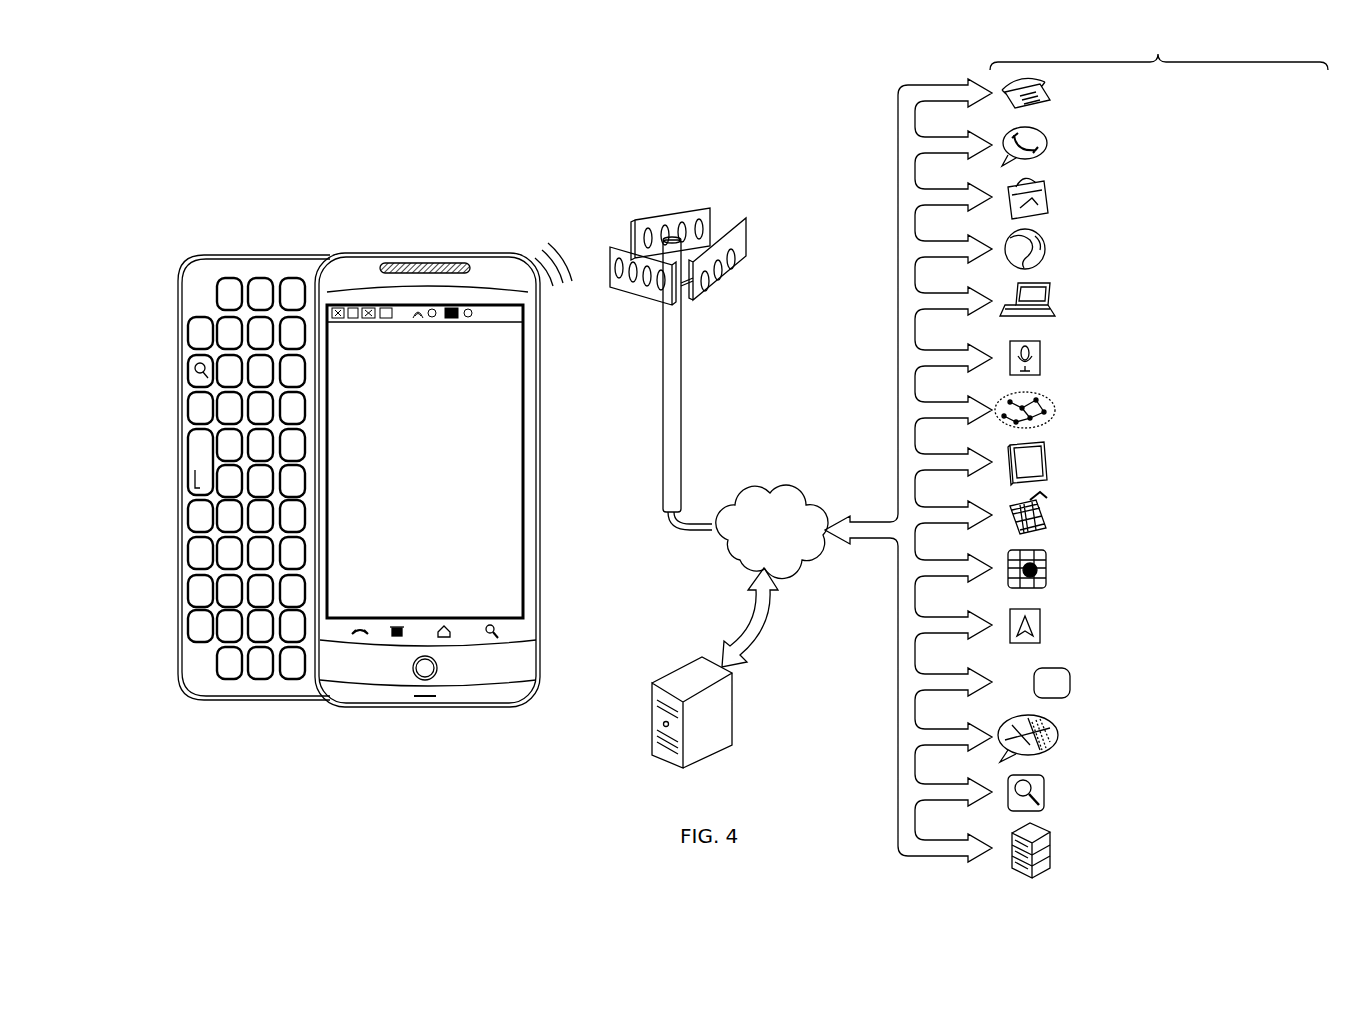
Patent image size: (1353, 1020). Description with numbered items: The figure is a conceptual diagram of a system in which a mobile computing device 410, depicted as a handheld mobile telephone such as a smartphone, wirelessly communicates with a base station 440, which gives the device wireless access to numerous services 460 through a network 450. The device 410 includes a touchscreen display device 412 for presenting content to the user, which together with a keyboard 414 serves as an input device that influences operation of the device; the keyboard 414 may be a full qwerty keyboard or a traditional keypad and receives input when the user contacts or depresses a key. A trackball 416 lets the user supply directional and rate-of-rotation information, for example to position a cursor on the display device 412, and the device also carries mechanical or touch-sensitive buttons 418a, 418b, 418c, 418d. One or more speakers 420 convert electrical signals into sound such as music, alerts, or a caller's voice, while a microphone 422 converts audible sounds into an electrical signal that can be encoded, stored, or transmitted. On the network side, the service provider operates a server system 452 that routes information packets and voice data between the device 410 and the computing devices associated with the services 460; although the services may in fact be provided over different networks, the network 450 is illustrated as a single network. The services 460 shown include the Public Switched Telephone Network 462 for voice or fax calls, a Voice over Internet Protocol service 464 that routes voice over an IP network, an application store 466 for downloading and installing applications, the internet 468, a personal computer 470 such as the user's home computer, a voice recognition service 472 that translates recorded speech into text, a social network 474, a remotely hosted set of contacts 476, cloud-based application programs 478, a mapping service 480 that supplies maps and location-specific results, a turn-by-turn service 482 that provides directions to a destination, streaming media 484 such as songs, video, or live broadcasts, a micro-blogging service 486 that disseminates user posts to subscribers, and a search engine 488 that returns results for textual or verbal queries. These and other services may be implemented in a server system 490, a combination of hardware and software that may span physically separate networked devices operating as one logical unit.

The mobile computing device 410 is at (478, 201).
The touchscreen display device 412 is at (530, 470).
The keyboard 414 is at (285, 257).
The trackball 416 is at (438, 668).
The button 418a is at (360, 625).
The button 418b is at (397, 625).
The button 418c is at (445, 625).
The button 418d is at (492, 625).
The speaker 420 is at (430, 265).
The microphone 422 is at (425, 700).
The base station 440 is at (724, 187).
The network 450 is at (765, 490).
The service provider server system 452 is at (733, 716).
The services 460 is at (1076, 456).
The Public Switched Telephone Network (PSTN) 462 is at (1050, 97).
The Voice over Internet Protocol (VoIP) service 464 is at (1048, 145).
The application store 466 is at (1046, 197).
The internet 468 is at (1046, 252).
The personal computer 470 is at (1052, 294).
The voice recognition service 472 is at (1042, 355).
The social network 474 is at (1056, 400).
The contacts 476 is at (1048, 462).
The cloud-based application programs 478 is at (1050, 518).
The mapping service 480 is at (1046, 560).
The turn-by-turn service 482 is at (1044, 622).
The streaming media 484 is at (1072, 680).
The micro-blogging service 486 is at (1056, 738).
The search engine 488 is at (1046, 794).
The server system 490 is at (1050, 845).